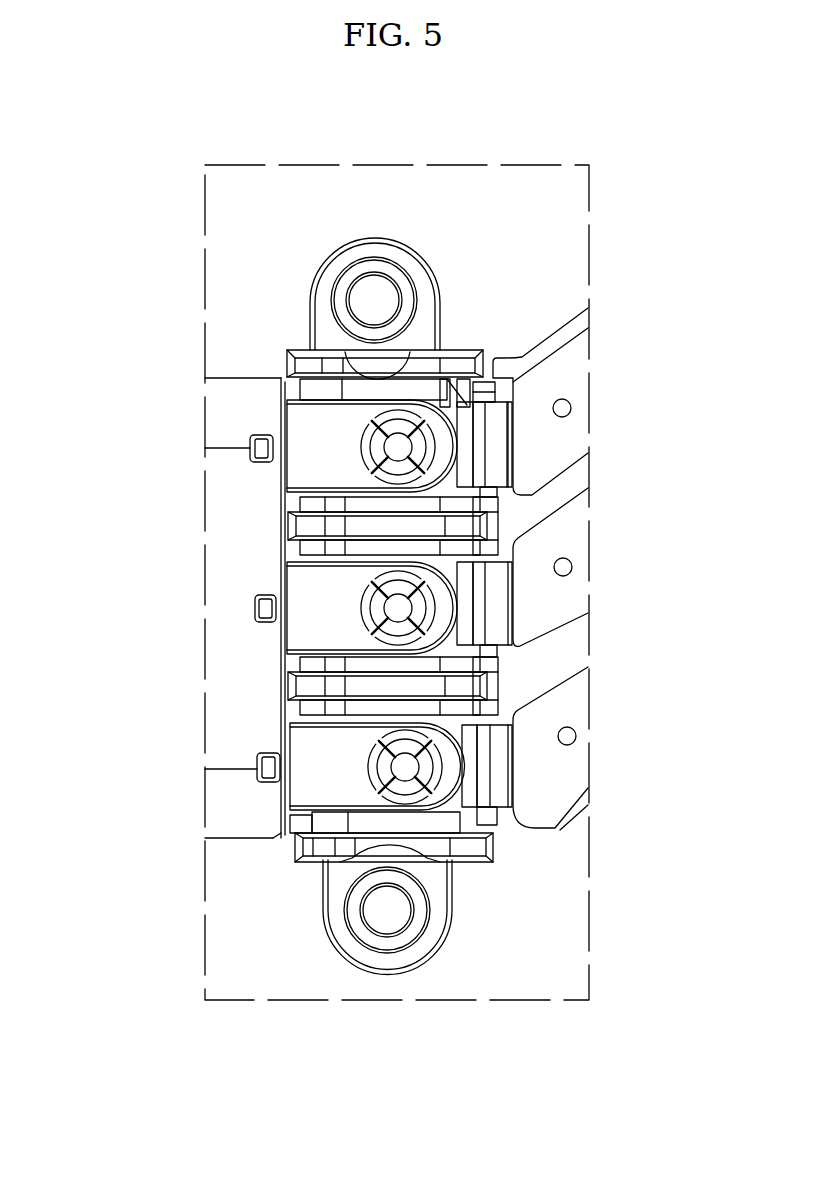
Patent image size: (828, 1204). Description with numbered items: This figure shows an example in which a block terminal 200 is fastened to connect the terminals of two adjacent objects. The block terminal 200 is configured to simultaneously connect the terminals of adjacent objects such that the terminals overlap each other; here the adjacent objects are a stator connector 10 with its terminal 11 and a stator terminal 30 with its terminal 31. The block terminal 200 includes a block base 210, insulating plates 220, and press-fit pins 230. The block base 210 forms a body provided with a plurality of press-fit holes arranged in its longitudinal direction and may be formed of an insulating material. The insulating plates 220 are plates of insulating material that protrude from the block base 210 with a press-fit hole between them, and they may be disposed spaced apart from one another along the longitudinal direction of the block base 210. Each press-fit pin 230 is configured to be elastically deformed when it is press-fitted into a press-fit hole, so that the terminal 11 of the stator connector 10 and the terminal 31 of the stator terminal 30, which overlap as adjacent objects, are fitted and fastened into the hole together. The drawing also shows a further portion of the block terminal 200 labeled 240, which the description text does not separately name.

The stator connector 10 is at (227, 515).
The terminal 11 is at (315, 432).
The stator terminal 30 is at (563, 308).
The terminal 31 is at (467, 430).
The block terminal 200 is at (262, 213).
The block base 210 is at (290, 293).
The insulating plates 220 is at (370, 527).
The press-fit pins 230 is at (435, 425).
The lower coupling eyelet 240 is at (420, 917).